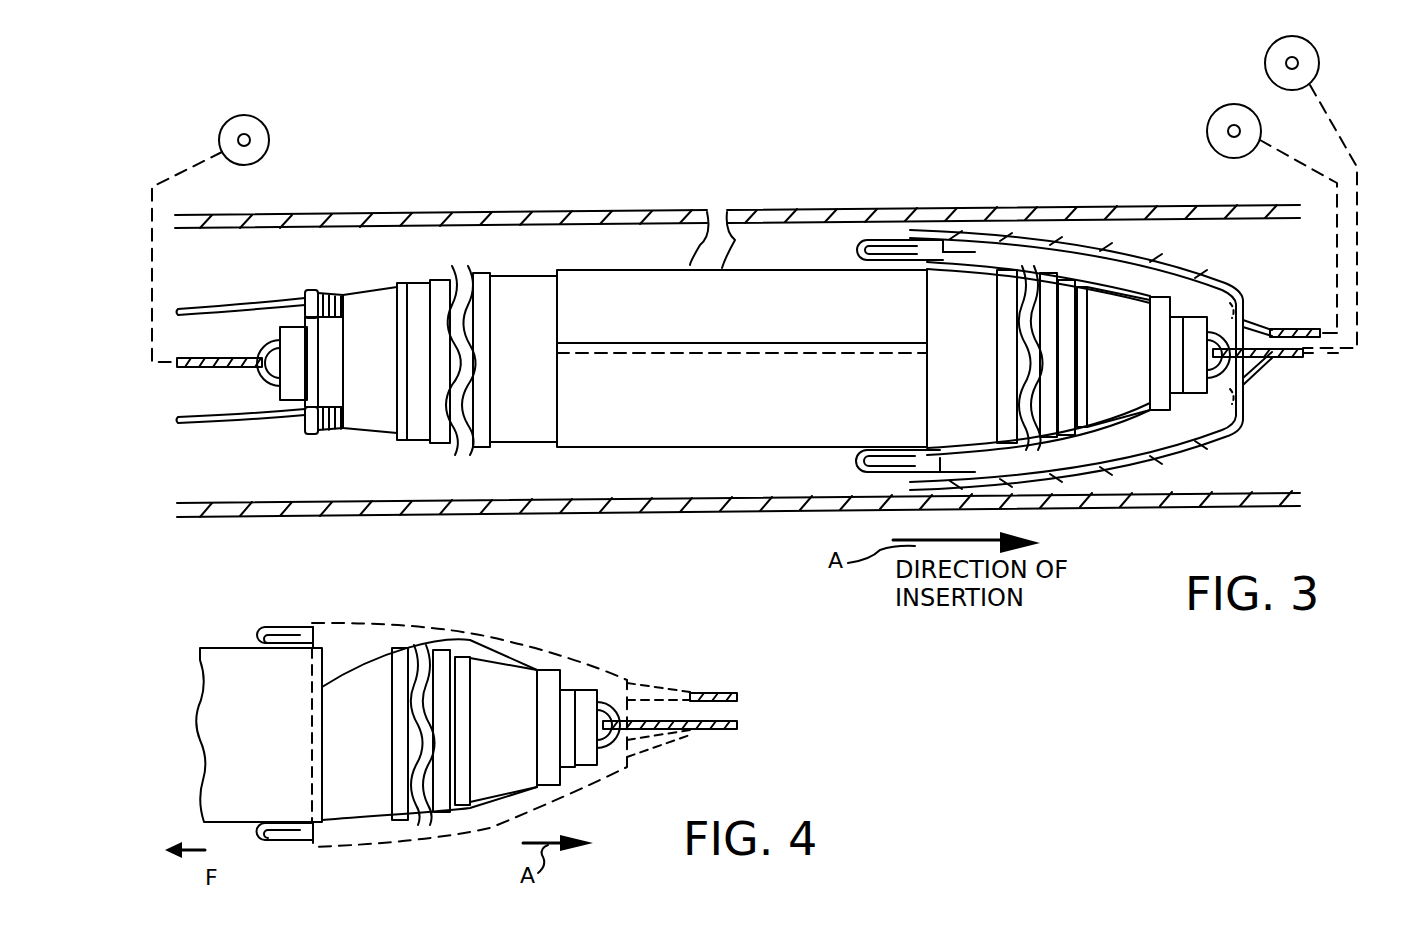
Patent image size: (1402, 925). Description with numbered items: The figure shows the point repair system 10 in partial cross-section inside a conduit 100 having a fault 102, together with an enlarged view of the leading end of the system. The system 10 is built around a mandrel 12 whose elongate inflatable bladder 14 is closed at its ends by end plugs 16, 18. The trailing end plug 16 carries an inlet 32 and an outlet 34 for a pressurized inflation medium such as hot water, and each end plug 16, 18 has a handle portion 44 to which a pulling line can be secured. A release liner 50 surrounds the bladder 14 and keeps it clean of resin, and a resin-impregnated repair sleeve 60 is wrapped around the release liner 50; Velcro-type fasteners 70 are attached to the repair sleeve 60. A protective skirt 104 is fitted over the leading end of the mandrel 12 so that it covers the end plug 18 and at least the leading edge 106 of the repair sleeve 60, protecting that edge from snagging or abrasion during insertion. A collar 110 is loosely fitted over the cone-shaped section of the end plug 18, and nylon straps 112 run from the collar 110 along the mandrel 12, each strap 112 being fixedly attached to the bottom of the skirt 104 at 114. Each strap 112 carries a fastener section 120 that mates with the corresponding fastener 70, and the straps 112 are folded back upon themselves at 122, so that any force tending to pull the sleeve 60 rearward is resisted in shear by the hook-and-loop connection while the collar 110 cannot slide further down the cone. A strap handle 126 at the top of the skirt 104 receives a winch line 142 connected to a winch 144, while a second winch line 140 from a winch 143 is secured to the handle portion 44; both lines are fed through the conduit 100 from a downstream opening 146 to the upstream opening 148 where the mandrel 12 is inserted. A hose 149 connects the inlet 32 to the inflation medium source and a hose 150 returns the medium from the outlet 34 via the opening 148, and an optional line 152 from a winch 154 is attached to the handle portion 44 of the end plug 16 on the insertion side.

In FIG. 3, the point repair system 10 is at (515, 480).
In FIG. 3, the mandrel 12 is at (498, 262).
In FIG. 3, the elongate inflatable bladder 14 is at (418, 282).
In FIG. 3, the end plug 16 is at (376, 420).
In FIG. 3, the end plug 18 is at (1118, 400).
In FIG. 4, the end plug 18 is at (493, 690).
In FIG. 3, the inlet 32 is at (330, 292).
In FIG. 3, the outlet 34 is at (330, 432).
In FIG. 3, the handle portion 44 is at (262, 356).
In FIG. 4, the handle portion 44 is at (597, 727).
In FIG. 3, the release liner 50 is at (478, 448).
In FIG. 3, the resin-impregnated repair sleeve 60 is at (598, 450).
In FIG. 4, the resin-impregnated repair sleeve 60 is at (218, 655).
In FIG. 3, the Velcro-type fastener 70 is at (873, 278).
In FIG. 4, the Velcro-type fastener 70 is at (283, 648).
In FIG. 3, the conduit 100 is at (1215, 508).
In FIG. 3, the fault 102 is at (716, 210).
In FIG. 3, the protective skirt 104 is at (1135, 256).
In FIG. 4, the protective skirt 104 is at (555, 797).
In FIG. 3, the leading edge 106 is at (930, 310).
In FIG. 4, the leading edge 106 is at (330, 680).
In FIG. 3, the collar 110 is at (1162, 298).
In FIG. 4, the collar 110 is at (547, 670).
In FIG. 3, the nylon strap 112 is at (1010, 272).
In FIG. 4, the nylon strap 112 is at (398, 648).
In FIG. 3, the strap attachment point 114 is at (925, 480).
In FIG. 4, the strap attachment point 114 is at (312, 847).
In FIG. 3, the fastener section 120 is at (880, 472).
In FIG. 4, the fastener section 120 is at (283, 637).
In FIG. 3, the folded-back strap portion 122 is at (860, 246).
In FIG. 4, the folded-back strap portion 122 is at (222, 822).
In FIG. 3, the strap handle 126 is at (1258, 324).
In FIG. 4, the strap handle 126 is at (660, 690).
In FIG. 3, the winch line 140 is at (1285, 358).
In FIG. 4, the winch line 140 is at (705, 730).
In FIG. 3, the winch line 142 is at (1290, 329).
In FIG. 4, the winch line 142 is at (725, 692).
In FIG. 3, the winch 143 is at (1207, 131).
In FIG. 3, the winch 144 is at (1265, 62).
In FIG. 3, the opening 146 is at (1365, 478).
In FIG. 3, the opening 148 is at (158, 472).
In FIG. 3, the hose 149 is at (218, 303).
In FIG. 3, the hose 150 is at (222, 424).
In FIG. 3, the line 152 is at (195, 366).
In FIG. 3, the winch 154 is at (270, 132).